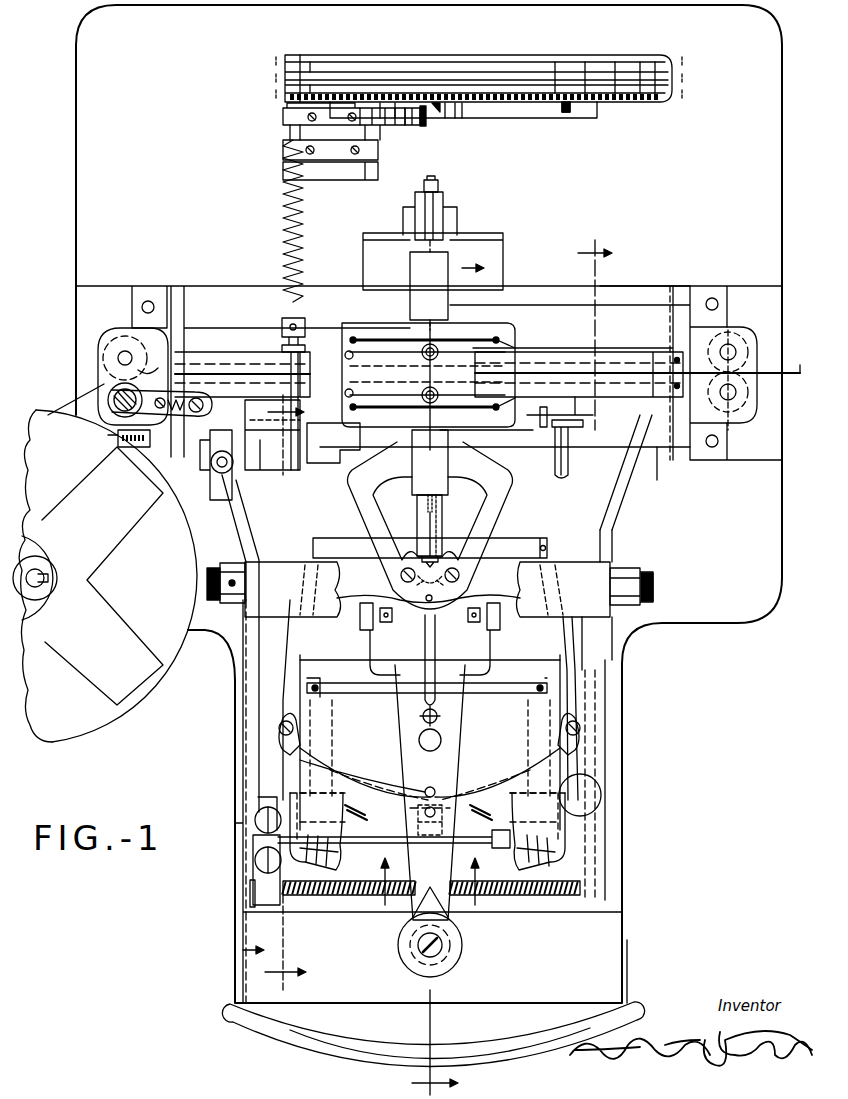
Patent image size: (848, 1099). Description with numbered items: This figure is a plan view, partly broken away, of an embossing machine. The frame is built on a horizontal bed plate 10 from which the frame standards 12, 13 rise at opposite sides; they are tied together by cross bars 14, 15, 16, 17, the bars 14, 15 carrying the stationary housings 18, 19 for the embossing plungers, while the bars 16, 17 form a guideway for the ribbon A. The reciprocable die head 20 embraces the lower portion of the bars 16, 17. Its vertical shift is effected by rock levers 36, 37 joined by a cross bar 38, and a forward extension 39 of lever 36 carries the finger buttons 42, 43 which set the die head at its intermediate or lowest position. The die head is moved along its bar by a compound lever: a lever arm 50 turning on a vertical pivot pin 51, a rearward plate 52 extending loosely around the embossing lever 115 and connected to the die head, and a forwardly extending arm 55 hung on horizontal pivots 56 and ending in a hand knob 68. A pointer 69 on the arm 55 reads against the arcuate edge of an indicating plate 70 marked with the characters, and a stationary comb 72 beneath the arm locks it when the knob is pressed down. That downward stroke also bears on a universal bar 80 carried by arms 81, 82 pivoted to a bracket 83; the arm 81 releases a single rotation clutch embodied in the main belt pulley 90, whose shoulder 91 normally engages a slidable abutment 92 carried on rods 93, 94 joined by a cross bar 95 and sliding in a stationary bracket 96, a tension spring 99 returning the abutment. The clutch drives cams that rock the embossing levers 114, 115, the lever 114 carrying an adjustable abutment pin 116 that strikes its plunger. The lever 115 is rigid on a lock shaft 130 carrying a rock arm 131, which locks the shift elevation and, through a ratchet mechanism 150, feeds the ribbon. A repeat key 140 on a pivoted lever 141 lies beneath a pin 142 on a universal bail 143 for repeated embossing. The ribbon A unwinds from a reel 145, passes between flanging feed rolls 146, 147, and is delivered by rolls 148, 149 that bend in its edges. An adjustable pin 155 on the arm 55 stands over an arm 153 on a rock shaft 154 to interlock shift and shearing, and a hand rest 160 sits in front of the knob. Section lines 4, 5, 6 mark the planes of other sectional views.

The bed plate 10 is at (429, 504).
The frame standard 12 is at (180, 300).
The frame standard 13 is at (670, 325).
The cross bar 14 is at (632, 299).
The cross bar 15 is at (654, 471).
The cross bar 16 is at (584, 361).
The cross bar 17 is at (505, 422).
The stationary housing 18 is at (429, 285).
The stationary housing 19 is at (430, 462).
The die head 20 is at (516, 327).
The rock lever 36 is at (247, 512).
The rock lever 37 is at (620, 512).
The cross bar 38 is at (430, 589).
The forward extension 39 is at (255, 733).
The finger button 42 is at (255, 818).
The finger button 43 is at (255, 862).
The section line 4 is at (454, 677).
The section line 5 is at (296, 692).
The section line 6 is at (436, 599).
The lever arm 50 is at (440, 660).
The pivot pin 51 is at (463, 583).
The plate 52 is at (430, 525).
The arm 55 is at (455, 749).
The horizontal pivots 56 is at (360, 620).
The hand knob 68 is at (450, 960).
The pointer 69 is at (425, 897).
The indicating plate 70 is at (537, 831).
The comb 72 is at (555, 897).
The universal bar 80 is at (425, 808).
The arm 81 is at (290, 640).
The arm 82 is at (565, 641).
The bracket 83 is at (430, 548).
The main belt pulley 90 is at (655, 62).
The shoulder 91 is at (440, 106).
The slidable abutment 92 is at (422, 128).
The rod 93 is at (285, 126).
The rod 94 is at (378, 134).
The cross bar 95 is at (330, 172).
The stationary bracket 96 is at (330, 150).
The tension spring 99 is at (284, 214).
The embossing lever 114 is at (444, 214).
The embossing lever 115 is at (444, 527).
The abutment pin 116 is at (440, 186).
The lock shaft 130 is at (270, 460).
The rock arm 131 is at (214, 500).
The repeat key 140 is at (584, 790).
The pivoted lever 141 is at (583, 636).
The pin 142 is at (557, 426).
The universal bail 143 is at (542, 425).
The reel 145 is at (105, 576).
The roll 146 is at (130, 335).
The roll 147 is at (104, 384).
The roll 148 is at (752, 345).
The roll 149 is at (745, 412).
The ratchet mechanism 150 is at (140, 338).
The arm 153 is at (462, 788).
The rock shaft 154 is at (358, 838).
The adjustable pin 155 is at (425, 790).
The hand rest 160 is at (507, 1048).
The ribbon A is at (415, 379).